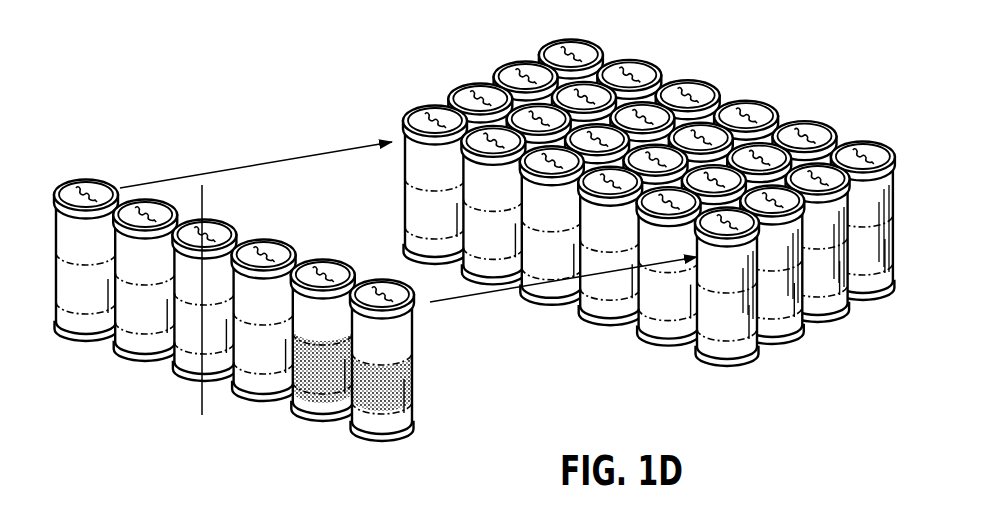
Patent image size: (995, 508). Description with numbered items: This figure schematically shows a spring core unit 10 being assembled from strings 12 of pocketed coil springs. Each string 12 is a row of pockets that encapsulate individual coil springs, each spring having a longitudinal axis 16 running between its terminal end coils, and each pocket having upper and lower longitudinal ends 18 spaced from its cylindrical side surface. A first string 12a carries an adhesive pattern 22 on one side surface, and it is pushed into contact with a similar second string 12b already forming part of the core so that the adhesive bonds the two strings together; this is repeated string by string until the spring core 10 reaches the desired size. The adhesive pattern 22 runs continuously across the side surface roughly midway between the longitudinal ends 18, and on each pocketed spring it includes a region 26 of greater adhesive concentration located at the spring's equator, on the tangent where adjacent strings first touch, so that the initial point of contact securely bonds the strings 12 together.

The spring core unit 10 is at (634, 188).
The string of pocketed coil springs 12 is at (458, 84).
The first string of pocketed coil springs 12a is at (71, 187).
The second string of pocketed coil springs 12b is at (412, 113).
The longitudinal axis 16 is at (197, 400).
The longitudinal end 18 is at (221, 235).
The adhesive pattern 22 is at (125, 320).
The region of greater concentration of adhesive 26 is at (367, 403).